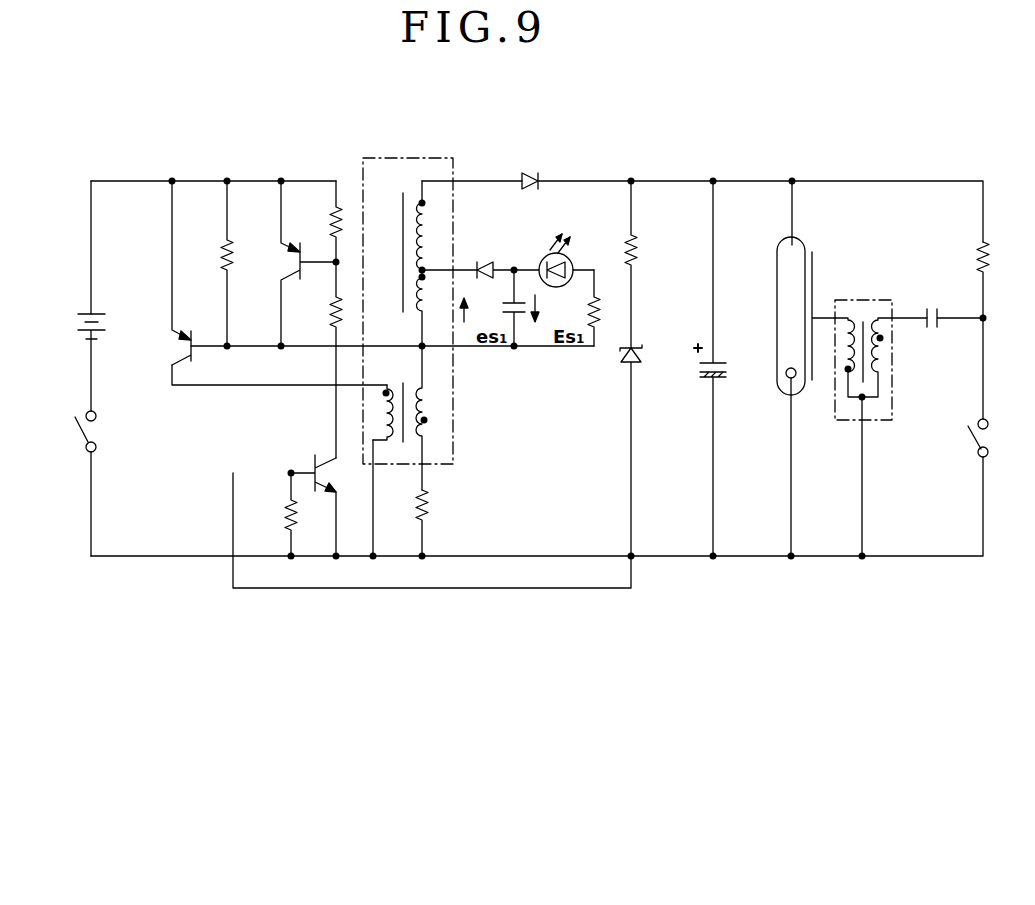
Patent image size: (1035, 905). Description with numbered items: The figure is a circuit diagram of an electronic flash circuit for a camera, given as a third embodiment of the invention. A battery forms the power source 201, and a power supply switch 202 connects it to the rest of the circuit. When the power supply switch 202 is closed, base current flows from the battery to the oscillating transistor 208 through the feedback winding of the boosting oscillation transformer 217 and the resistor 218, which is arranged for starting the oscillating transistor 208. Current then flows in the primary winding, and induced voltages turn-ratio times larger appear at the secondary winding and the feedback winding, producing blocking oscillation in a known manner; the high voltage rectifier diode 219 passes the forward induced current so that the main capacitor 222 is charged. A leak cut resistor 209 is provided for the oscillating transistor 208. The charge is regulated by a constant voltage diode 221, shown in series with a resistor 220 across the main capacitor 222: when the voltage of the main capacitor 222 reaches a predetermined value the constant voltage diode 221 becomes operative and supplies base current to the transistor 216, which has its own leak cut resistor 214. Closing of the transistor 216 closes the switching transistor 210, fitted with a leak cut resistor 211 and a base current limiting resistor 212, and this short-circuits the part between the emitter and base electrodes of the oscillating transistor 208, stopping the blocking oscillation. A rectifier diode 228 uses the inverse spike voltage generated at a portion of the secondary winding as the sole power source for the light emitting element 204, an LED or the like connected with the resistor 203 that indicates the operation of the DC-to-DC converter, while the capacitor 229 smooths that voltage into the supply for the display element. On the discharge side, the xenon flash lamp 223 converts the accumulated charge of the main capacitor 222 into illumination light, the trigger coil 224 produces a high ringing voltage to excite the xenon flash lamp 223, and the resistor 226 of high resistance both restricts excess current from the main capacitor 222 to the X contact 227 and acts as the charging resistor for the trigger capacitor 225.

The power source 201 is at (79, 326).
The power supply switch 202 is at (80, 432).
The resistor 203 is at (596, 300).
The light emitting element 204 is at (566, 257).
The oscillating transistor 208 is at (183, 333).
The leak cut resistor 209 is at (225, 247).
The switching transistor 210 is at (290, 250).
The leak cut resistor 211 is at (332, 209).
The base current limiting resistor 212 is at (331, 303).
The leak cut resistor 214 is at (288, 504).
The transistor 216 is at (312, 460).
The boosting oscillation transformer 217 is at (383, 158).
The resistor 218 is at (428, 497).
The high voltage rectifier diode 219 is at (522, 173).
The resistor 220 is at (641, 240).
The constant voltage diode 221 is at (642, 348).
The main capacitor 222 is at (720, 362).
The xenon flash lamp 223 is at (778, 245).
The trigger coil 224 is at (846, 300).
The trigger capacitor 225 is at (940, 310).
The resistor 226 is at (988, 245).
The X contact 227 is at (968, 432).
The rectifier diode 228 is at (483, 262).
The capacitor 229 is at (511, 318).